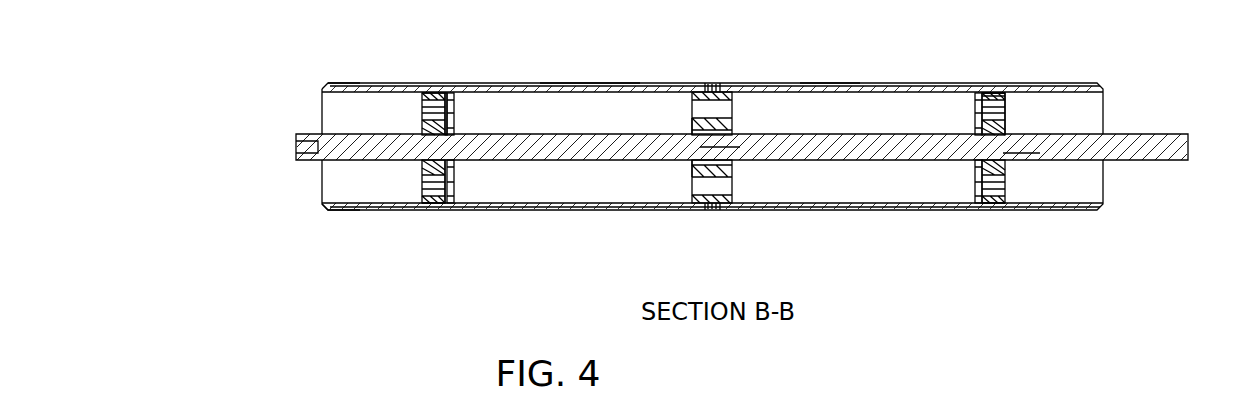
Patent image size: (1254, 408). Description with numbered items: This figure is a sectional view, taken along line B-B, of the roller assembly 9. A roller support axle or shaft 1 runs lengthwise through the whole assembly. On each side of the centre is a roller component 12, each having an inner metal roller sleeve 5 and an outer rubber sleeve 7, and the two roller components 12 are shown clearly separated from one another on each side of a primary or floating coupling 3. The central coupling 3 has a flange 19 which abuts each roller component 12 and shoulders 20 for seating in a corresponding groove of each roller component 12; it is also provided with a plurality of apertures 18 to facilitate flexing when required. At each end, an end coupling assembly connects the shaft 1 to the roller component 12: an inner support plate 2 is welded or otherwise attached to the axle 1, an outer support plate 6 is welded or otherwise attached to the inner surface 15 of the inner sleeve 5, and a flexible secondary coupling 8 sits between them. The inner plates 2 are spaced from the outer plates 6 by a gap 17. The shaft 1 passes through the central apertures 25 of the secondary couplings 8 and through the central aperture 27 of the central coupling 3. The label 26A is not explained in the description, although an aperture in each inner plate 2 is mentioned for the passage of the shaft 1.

The roller support axle 1 is at (1153, 165).
The inner support plate 2 is at (461, 127).
The primary or floating coupling 3 is at (687, 104).
The inner metal roller sleeve 5 is at (1072, 96).
The outer support plate 6 is at (966, 117).
The outer rubber sleeve 7 is at (612, 83).
The secondary coupling 8 is at (418, 124).
The roller assembly 9 is at (988, 96).
The roller component 12 is at (570, 79).
The inner surface 15 is at (358, 96).
The spacing or gap 17 is at (972, 110).
The apertures 18 is at (692, 186).
The flange 19 is at (711, 88).
The shoulders 20 is at (724, 87).
The central aperture 25 is at (1003, 153).
The shim 26A is at (456, 96).
The central aperture 27 is at (723, 152).